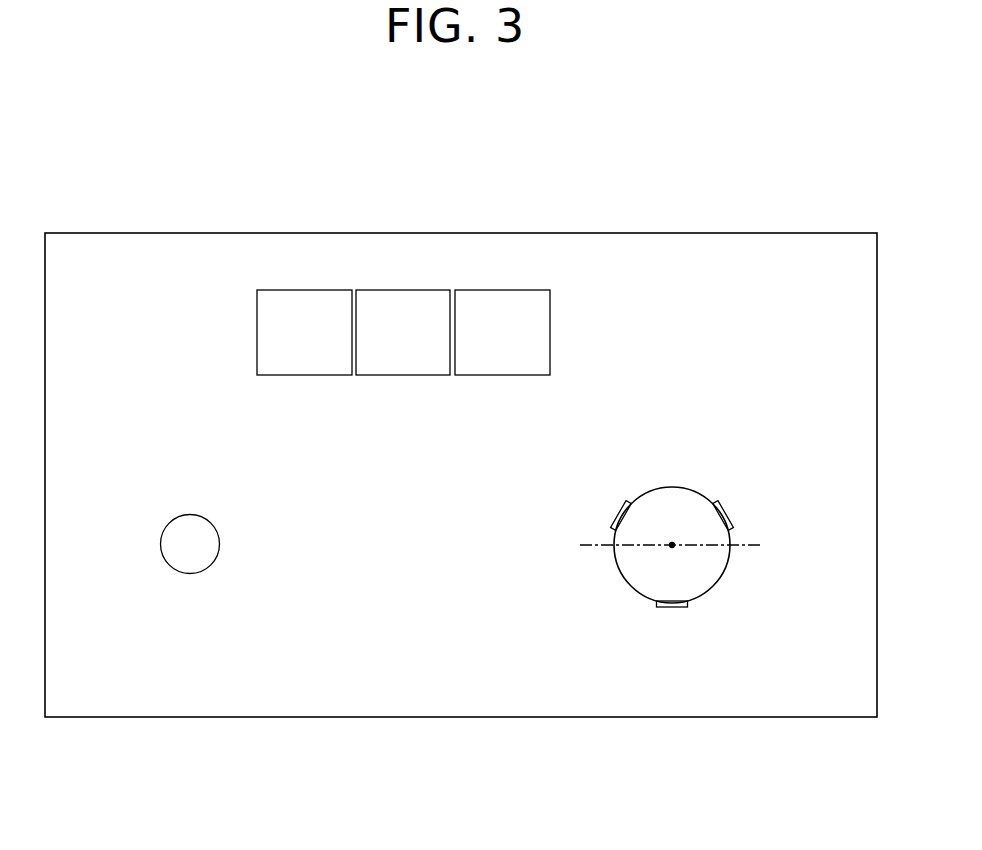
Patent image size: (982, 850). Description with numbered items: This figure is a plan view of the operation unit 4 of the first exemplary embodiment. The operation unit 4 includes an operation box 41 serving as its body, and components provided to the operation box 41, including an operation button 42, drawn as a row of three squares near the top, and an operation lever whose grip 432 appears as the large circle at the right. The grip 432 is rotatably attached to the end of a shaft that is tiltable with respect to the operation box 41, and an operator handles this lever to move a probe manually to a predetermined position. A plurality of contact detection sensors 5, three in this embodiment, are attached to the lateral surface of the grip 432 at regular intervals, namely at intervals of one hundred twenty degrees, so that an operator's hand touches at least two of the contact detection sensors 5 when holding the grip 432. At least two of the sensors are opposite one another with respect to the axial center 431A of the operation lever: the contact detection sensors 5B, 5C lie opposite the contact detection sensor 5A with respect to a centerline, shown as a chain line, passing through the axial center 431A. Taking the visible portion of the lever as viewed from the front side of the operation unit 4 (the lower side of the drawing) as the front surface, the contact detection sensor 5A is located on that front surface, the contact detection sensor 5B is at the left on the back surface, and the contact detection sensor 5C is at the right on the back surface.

The operation unit 4 is at (742, 181).
The operation box 41 is at (315, 717).
The operation button 42 is at (257, 335).
The grip 432 is at (628, 584).
The axial center 431A is at (672, 542).
The contact detection sensors 5 is at (680, 578).
The contact detection sensor 5A is at (672, 609).
The contact detection sensor 5B is at (615, 507).
The contact detection sensor 5C is at (729, 507).